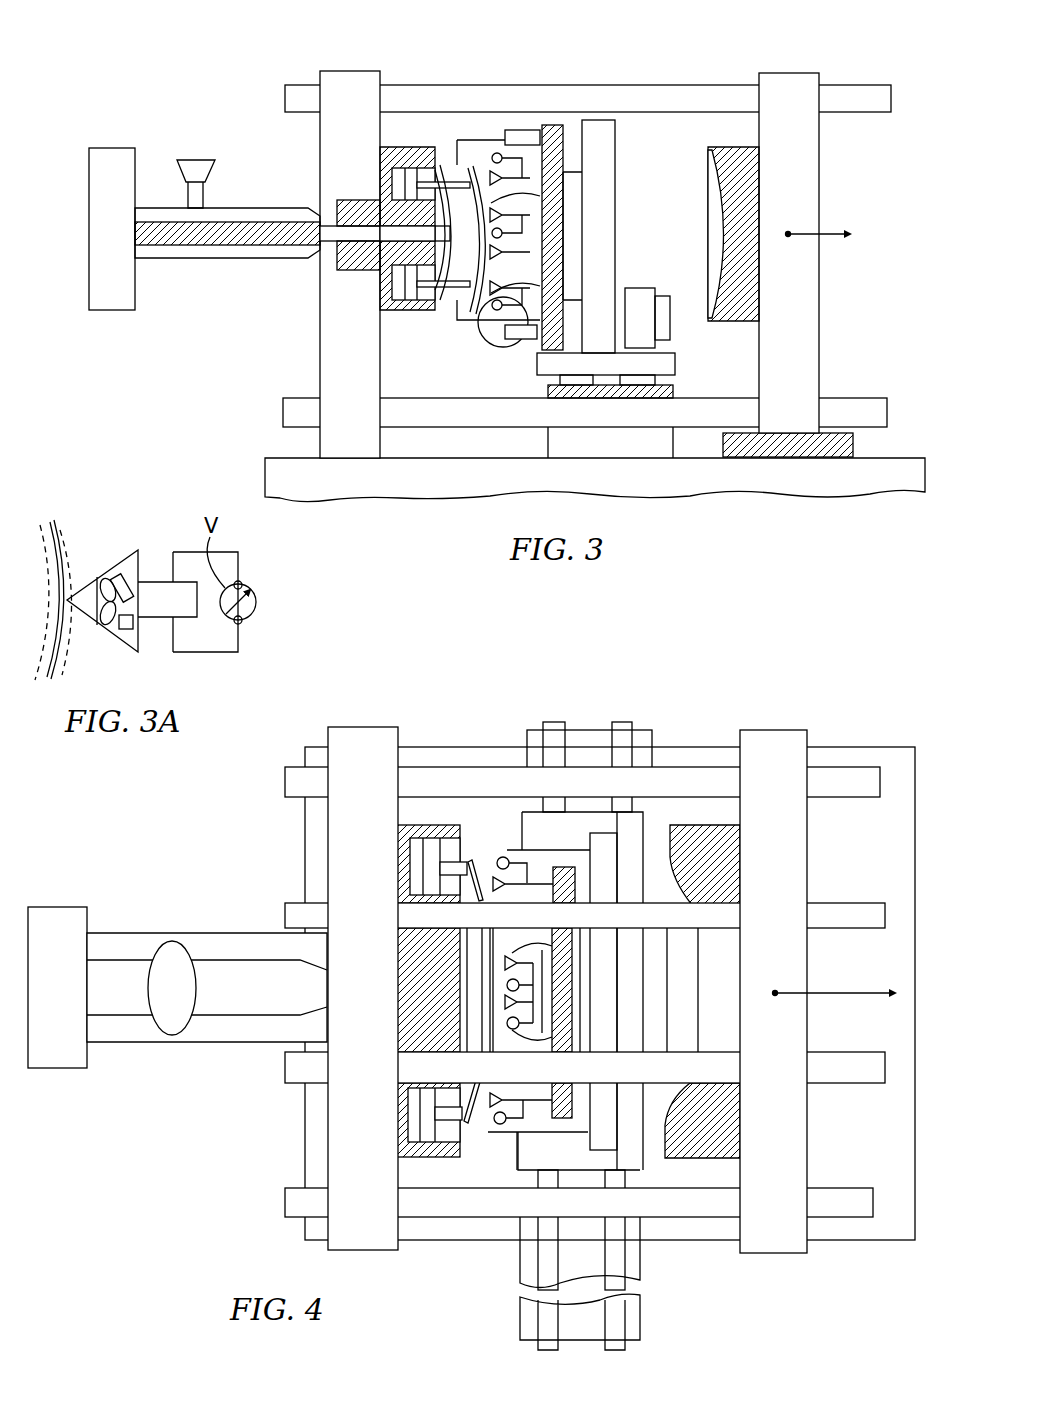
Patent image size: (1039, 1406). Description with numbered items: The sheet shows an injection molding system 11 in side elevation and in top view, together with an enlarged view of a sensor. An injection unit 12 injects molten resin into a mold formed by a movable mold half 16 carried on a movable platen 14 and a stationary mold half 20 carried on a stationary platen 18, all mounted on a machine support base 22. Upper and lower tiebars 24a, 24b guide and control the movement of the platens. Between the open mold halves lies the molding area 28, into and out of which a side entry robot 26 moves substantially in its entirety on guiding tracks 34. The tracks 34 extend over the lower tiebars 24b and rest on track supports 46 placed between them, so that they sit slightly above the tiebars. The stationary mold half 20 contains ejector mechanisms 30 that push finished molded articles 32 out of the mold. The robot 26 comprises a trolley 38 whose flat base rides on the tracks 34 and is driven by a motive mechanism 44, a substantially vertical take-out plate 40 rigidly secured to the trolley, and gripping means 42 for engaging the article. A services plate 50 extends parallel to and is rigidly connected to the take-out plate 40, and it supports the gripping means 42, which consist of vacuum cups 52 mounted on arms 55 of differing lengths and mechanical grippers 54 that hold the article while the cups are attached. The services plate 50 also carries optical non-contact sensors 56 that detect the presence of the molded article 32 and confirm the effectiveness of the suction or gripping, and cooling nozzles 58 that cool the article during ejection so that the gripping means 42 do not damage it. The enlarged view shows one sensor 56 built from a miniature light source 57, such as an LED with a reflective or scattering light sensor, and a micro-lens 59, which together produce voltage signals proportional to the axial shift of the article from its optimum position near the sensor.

In FIG. 3, the injection molding system 11 is at (470, 40).
In FIG. 4, the injection molding system 11 is at (588, 698).
In FIG. 3, the injection unit 12 is at (108, 152).
In FIG. 4, the injection unit 12 is at (124, 1045).
In FIG. 3, the movable platen 14 is at (796, 80).
In FIG. 4, the movable platen 14 is at (778, 738).
In FIG. 3, the movable mold half 16 is at (712, 152).
In FIG. 4, the movable mold half 16 is at (732, 882).
In FIG. 3, the stationary platen 18 is at (340, 78).
In FIG. 4, the stationary platen 18 is at (350, 740).
In FIG. 3, the stationary mold half 20 is at (420, 216).
In FIG. 4, the stationary mold half 20 is at (452, 1040).
In FIG. 3, the machine support base 22 is at (280, 467).
In FIG. 4, the machine support base 22 is at (863, 750).
In FIG. 3, the upper tiebar 24a is at (856, 103).
In FIG. 4, the upper tiebar 24a is at (835, 800).
In FIG. 3, the lower tiebar 24b is at (848, 407).
In FIG. 3, the side entry robot 26 is at (570, 78).
In FIG. 3, the molding area 28 is at (455, 398).
In FIG. 3, the ejector mechanisms 30 is at (400, 150).
In FIG. 4, the ejector mechanisms 30 is at (425, 881).
In FIG. 3, the molded article 32 is at (458, 305).
In FIG. 3A, the molded article 32 is at (50, 520).
In FIG. 4, the molded article 32 is at (480, 870).
In FIG. 3, the guiding tracks 34 is at (648, 386).
In FIG. 4, the guiding tracks 34 is at (555, 748).
In FIG. 3, the trolley 38 is at (665, 361).
In FIG. 4, the trolley 38 is at (522, 1165).
In FIG. 3, the take-out plate 40 is at (640, 205).
In FIG. 4, the take-out plate 40 is at (640, 1133).
In FIG. 3, the gripping means 42 is at (548, 118).
In FIG. 3, the motive mechanism 44 is at (640, 300).
In FIG. 3, the track supports 46 is at (655, 450).
In FIG. 4, the track supports 46 is at (582, 738).
In FIG. 3, the services plate 50 is at (598, 128).
In FIG. 4, the services plate 50 is at (602, 1150).
In FIG. 3, the vacuum cups 52 is at (482, 150).
In FIG. 3, the mechanical grippers 54 is at (450, 126).
In FIG. 3, the arms 55 is at (540, 258).
In FIG. 3, the optical non-contact sensors 56 is at (497, 152).
In FIG. 3A, the optical non-contact sensors 56 is at (130, 560).
In FIG. 4, the optical non-contact sensors 56 is at (496, 1128).
In FIG. 3A, the miniature light source 57 is at (120, 575).
In FIG. 3, the cooling nozzles 58 is at (515, 196).
In FIG. 4, the cooling nozzles 58 is at (522, 950).
In FIG. 3A, the micro-lens 59 is at (116, 622).